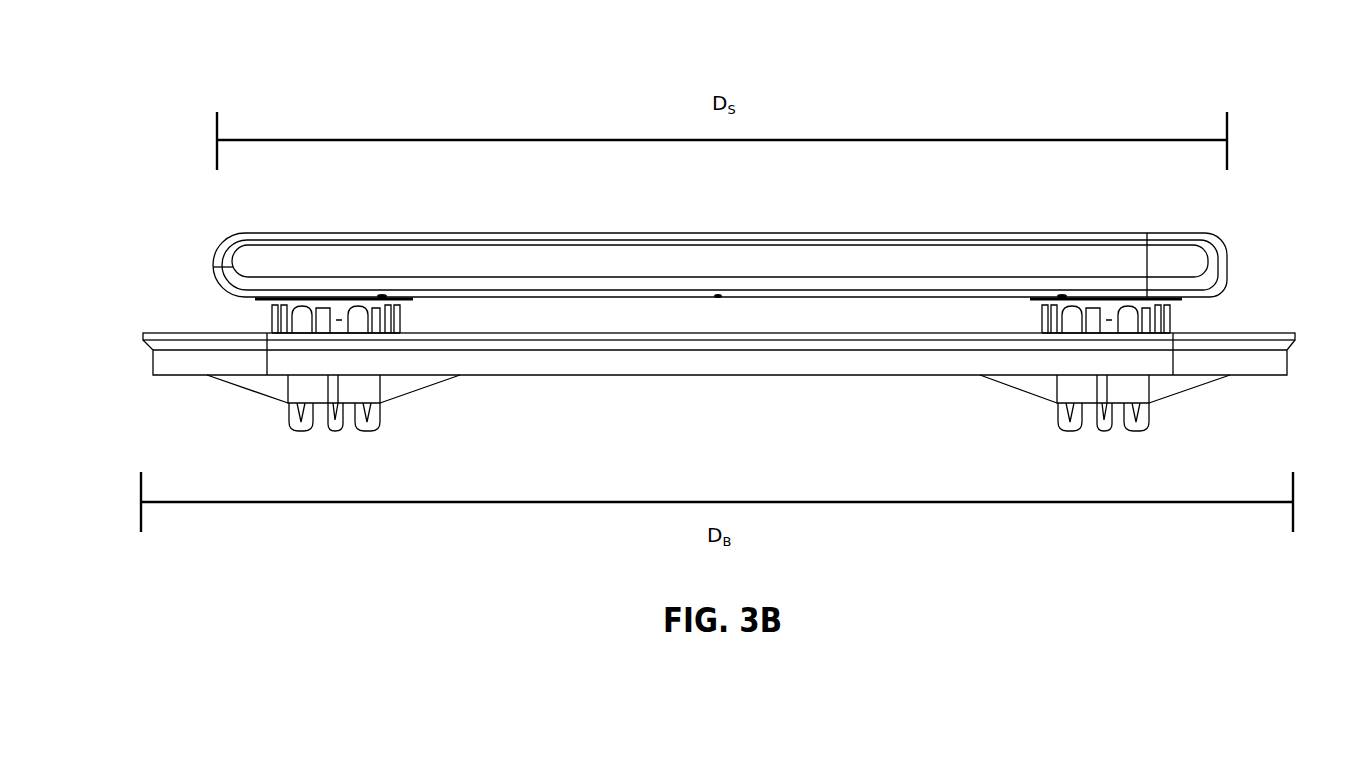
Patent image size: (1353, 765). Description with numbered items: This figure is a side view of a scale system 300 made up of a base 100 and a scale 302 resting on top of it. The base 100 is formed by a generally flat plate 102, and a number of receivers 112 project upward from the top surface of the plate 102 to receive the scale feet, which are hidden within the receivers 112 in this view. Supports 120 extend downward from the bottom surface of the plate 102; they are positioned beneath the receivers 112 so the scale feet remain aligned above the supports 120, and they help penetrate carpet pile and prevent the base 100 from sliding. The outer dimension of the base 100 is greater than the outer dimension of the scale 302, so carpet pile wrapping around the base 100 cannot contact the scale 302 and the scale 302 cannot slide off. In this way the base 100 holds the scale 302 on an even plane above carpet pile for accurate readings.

The scale system 300 is at (682, 222).
The scale 302 is at (792, 233).
The receivers 112 is at (265, 322).
The plate 102 is at (1253, 333).
The base 100 is at (726, 349).
The supports 120 is at (1050, 423).